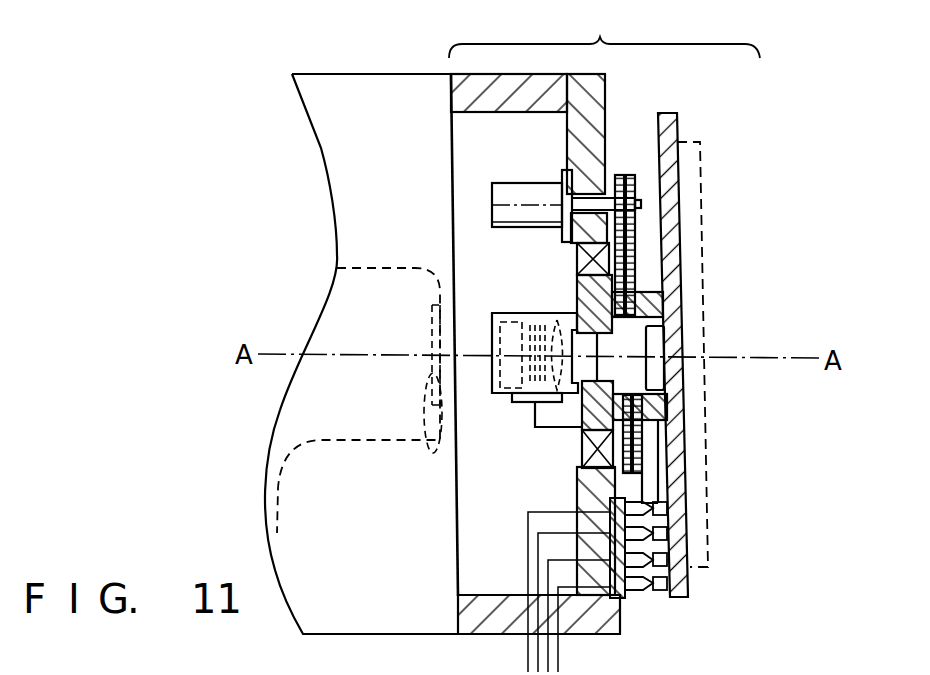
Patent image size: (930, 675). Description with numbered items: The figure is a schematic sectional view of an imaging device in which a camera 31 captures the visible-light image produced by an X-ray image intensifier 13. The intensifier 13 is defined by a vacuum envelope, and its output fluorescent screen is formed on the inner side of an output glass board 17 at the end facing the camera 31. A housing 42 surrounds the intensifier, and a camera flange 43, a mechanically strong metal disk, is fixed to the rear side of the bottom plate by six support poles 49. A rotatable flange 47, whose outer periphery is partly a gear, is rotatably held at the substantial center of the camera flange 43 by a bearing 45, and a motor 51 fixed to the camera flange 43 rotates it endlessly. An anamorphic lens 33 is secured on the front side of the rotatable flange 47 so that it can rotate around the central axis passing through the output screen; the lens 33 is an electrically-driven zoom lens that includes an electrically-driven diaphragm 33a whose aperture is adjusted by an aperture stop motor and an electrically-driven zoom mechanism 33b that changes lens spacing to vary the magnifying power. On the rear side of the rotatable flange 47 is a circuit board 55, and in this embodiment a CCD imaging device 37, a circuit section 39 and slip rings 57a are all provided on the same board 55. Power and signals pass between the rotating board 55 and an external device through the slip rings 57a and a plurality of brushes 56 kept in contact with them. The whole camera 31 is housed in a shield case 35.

The housing 42 is at (361, 74).
The X-ray image intensifier 13 is at (357, 443).
The output glass board 17 is at (428, 441).
The camera 31 is at (604, 320).
The support poles 49 is at (462, 101).
The camera flange 43 is at (598, 114).
The motor 51 is at (520, 185).
The bearing 45 is at (578, 258).
The rotatable flange 47 is at (579, 296).
The shield case 35 is at (635, 331).
The CCD imaging device 37 is at (655, 352).
The circuit board 55 is at (677, 125).
The circuit section 39 is at (702, 511).
The anamorphic lens 33 is at (492, 335).
The electrically-driven diaphragm 33a is at (534, 316).
The electrically-driven zoom mechanism 33b is at (512, 402).
The brushes 56 is at (632, 592).
The slip rings 57a is at (670, 548).